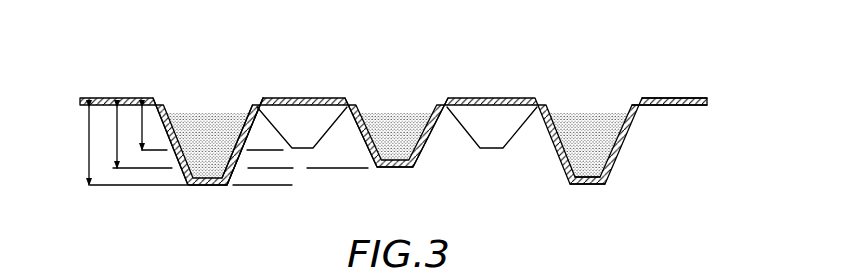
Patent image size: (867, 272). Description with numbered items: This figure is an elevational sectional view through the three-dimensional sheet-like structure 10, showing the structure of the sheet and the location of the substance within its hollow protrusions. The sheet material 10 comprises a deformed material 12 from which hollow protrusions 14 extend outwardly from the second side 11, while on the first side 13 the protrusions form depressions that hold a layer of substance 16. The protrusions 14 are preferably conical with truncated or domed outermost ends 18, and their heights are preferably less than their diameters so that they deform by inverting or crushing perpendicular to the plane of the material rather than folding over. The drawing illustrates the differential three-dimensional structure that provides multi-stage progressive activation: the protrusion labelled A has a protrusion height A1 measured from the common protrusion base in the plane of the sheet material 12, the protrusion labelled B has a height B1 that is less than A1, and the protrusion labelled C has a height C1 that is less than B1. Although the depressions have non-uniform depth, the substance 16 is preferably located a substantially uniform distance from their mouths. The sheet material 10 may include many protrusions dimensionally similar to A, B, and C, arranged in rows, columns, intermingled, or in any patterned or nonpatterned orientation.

The three-dimensional sheet-like structure 10 is at (425, 92).
The second side 11 is at (672, 106).
The deformed material 12 is at (707, 100).
The first side 13 is at (667, 97).
The hollow protrusions 14 is at (240, 157).
The layer of substance 16 is at (200, 131).
The outermost ends 18 is at (580, 185).
The protrusion A is at (198, 186).
The protrusion B is at (387, 168).
The protrusion C is at (295, 150).
The protrusion height A1 is at (88, 152).
The protrusion height B1 is at (116, 140).
The protrusion height C1 is at (141, 132).